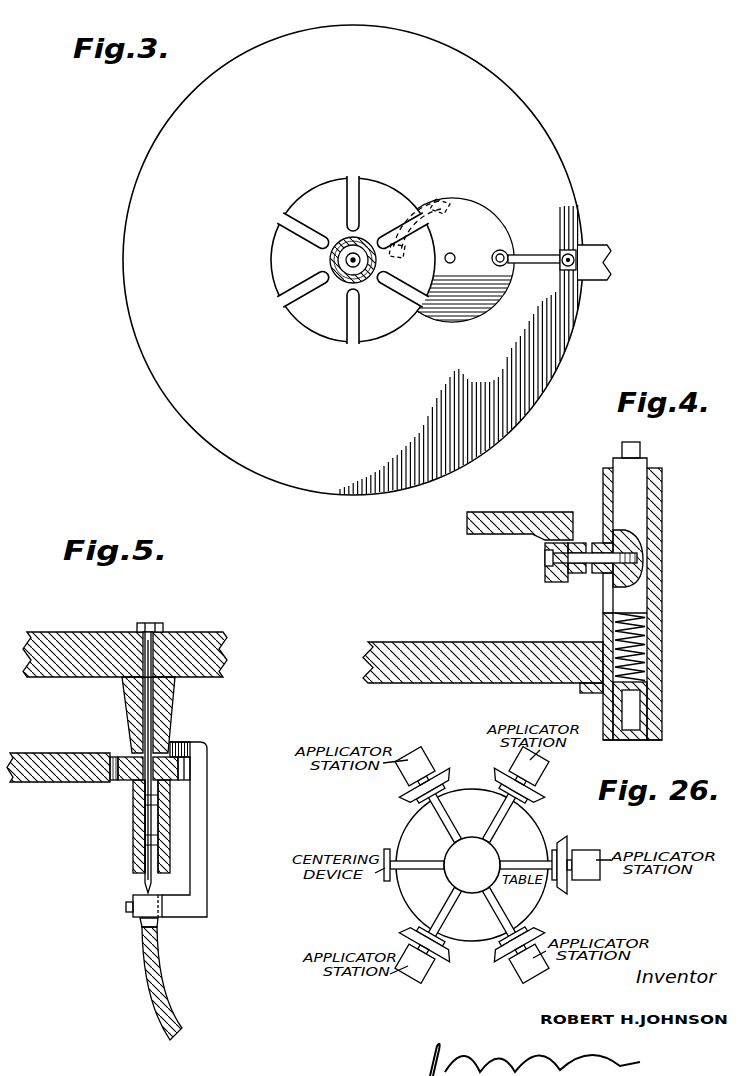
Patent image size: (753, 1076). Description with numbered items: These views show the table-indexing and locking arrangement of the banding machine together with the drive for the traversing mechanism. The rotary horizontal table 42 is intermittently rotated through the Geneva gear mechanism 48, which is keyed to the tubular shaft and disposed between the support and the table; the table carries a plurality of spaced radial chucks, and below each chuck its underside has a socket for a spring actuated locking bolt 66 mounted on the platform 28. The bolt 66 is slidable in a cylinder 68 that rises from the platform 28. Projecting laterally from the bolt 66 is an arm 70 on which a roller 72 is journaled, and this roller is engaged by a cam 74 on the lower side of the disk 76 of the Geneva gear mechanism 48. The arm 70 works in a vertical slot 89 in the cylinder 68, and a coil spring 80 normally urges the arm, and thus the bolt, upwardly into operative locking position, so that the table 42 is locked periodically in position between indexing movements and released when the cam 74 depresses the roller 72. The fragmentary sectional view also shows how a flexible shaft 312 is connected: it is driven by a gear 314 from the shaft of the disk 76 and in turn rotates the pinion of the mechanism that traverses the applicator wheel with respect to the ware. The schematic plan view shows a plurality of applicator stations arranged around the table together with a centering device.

In FIG. 4, the platform 28 is at (429, 673).
In FIG. 5, the platform 28 is at (66, 632).
In FIG. 3, the rotary horizontal table 42 is at (546, 152).
In FIG. 3, the Geneva gear mechanism 48 is at (379, 190).
In FIG. 3, the spring actuated locking bolt 66 is at (574, 256).
In FIG. 4, the spring actuated locking bolt 66 is at (628, 490).
In FIG. 3, the cylinder 68 is at (577, 266).
In FIG. 4, the cylinder 68 is at (650, 570).
In FIG. 3, the arm 70 is at (528, 264).
In FIG. 4, the arm 70 is at (589, 541).
In FIG. 3, the roller 72 is at (508, 250).
In FIG. 4, the roller 72 is at (557, 583).
In FIG. 3, the cam 74 is at (441, 197).
In FIG. 3, the disk 76 is at (465, 260).
In FIG. 4, the disk 76 is at (467, 524).
In FIG. 4, the coil spring 80 is at (650, 653).
In FIG. 4, the vertical slot 89 is at (608, 602).
In FIG. 5, the flexible shaft 312 is at (160, 961).
In FIG. 5, the gear 314 is at (68, 782).